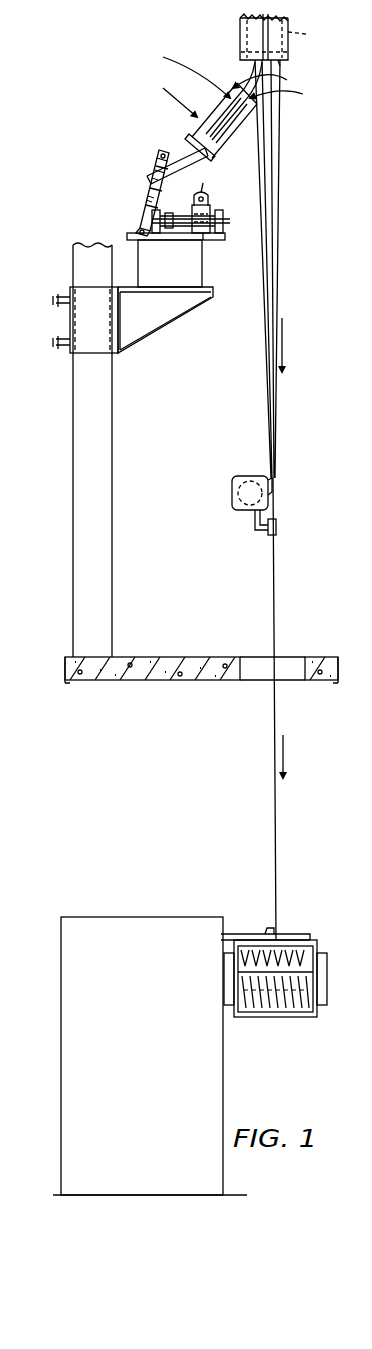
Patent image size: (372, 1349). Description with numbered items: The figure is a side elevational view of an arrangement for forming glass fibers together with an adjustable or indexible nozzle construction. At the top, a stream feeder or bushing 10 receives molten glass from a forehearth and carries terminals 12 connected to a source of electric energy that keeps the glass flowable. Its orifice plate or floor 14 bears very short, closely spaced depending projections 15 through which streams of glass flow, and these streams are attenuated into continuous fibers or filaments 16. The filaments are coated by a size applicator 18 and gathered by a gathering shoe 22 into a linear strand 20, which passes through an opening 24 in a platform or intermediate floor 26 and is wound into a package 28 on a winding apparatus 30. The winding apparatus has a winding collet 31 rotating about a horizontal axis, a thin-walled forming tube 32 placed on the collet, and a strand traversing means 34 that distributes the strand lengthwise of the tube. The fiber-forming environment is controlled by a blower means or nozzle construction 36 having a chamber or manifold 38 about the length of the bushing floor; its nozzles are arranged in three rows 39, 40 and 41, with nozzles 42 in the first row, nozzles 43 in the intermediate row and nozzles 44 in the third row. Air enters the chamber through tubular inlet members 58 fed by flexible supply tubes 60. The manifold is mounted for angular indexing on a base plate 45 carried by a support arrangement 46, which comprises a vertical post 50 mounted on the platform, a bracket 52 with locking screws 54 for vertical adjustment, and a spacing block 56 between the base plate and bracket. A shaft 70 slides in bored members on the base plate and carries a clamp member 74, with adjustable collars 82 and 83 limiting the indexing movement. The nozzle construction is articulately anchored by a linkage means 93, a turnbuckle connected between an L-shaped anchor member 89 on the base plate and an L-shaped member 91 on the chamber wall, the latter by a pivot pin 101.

The stream feeder or bushing 10 is at (240, 40).
The terminals 12 is at (288, 22).
The orifice plate or floor 14 is at (313, 42).
The depending projections 15 is at (246, 64).
The continuous fibers or filaments 16 is at (272, 118).
The size or filament coating applicator 18 is at (258, 472).
The linear group or strand 20 is at (271, 571).
The gathering shoe 22 is at (268, 531).
The opening 24 is at (262, 665).
The platform or intermediate floor 26 is at (172, 655).
The package 28 is at (262, 1020).
The winding apparatus 30 is at (91, 915).
The winding collet 31 is at (325, 958).
The collecting tube or forming tube 32 is at (292, 940).
The strand traversing means 34 is at (272, 926).
The blower means or nozzle construction 36 is at (164, 91).
The chamber or manifold 38 is at (218, 165).
The row of nozzles 39 is at (283, 62).
The intermediate row of nozzles 40 is at (275, 80).
The row of nozzles 41 is at (292, 93).
The nozzles 42 is at (181, 71).
The nozzles 43 is at (216, 112).
The nozzles 44 is at (240, 104).
The base plate 45 is at (217, 240).
The support arrangement 46 is at (207, 307).
The post or structural member 50 is at (110, 426).
The adjustable means or bracket 52 is at (160, 324).
The locking screws 54 is at (55, 342).
The spacing block 56 is at (167, 279).
The tubular air or gas inlet members 58 is at (196, 176).
The air or gas supply tubes 60 is at (155, 182).
The shaft 70 is at (222, 222).
The block or clamp member 74 is at (204, 240).
The collar or abutment 82 is at (213, 210).
The collar or abutment 83 is at (173, 212).
The L-shaped anchor member or projection 89 is at (130, 228).
The L-shaped member or projection 91 is at (165, 152).
The linkage means 93 is at (150, 162).
The pivot pin 101 is at (160, 150).